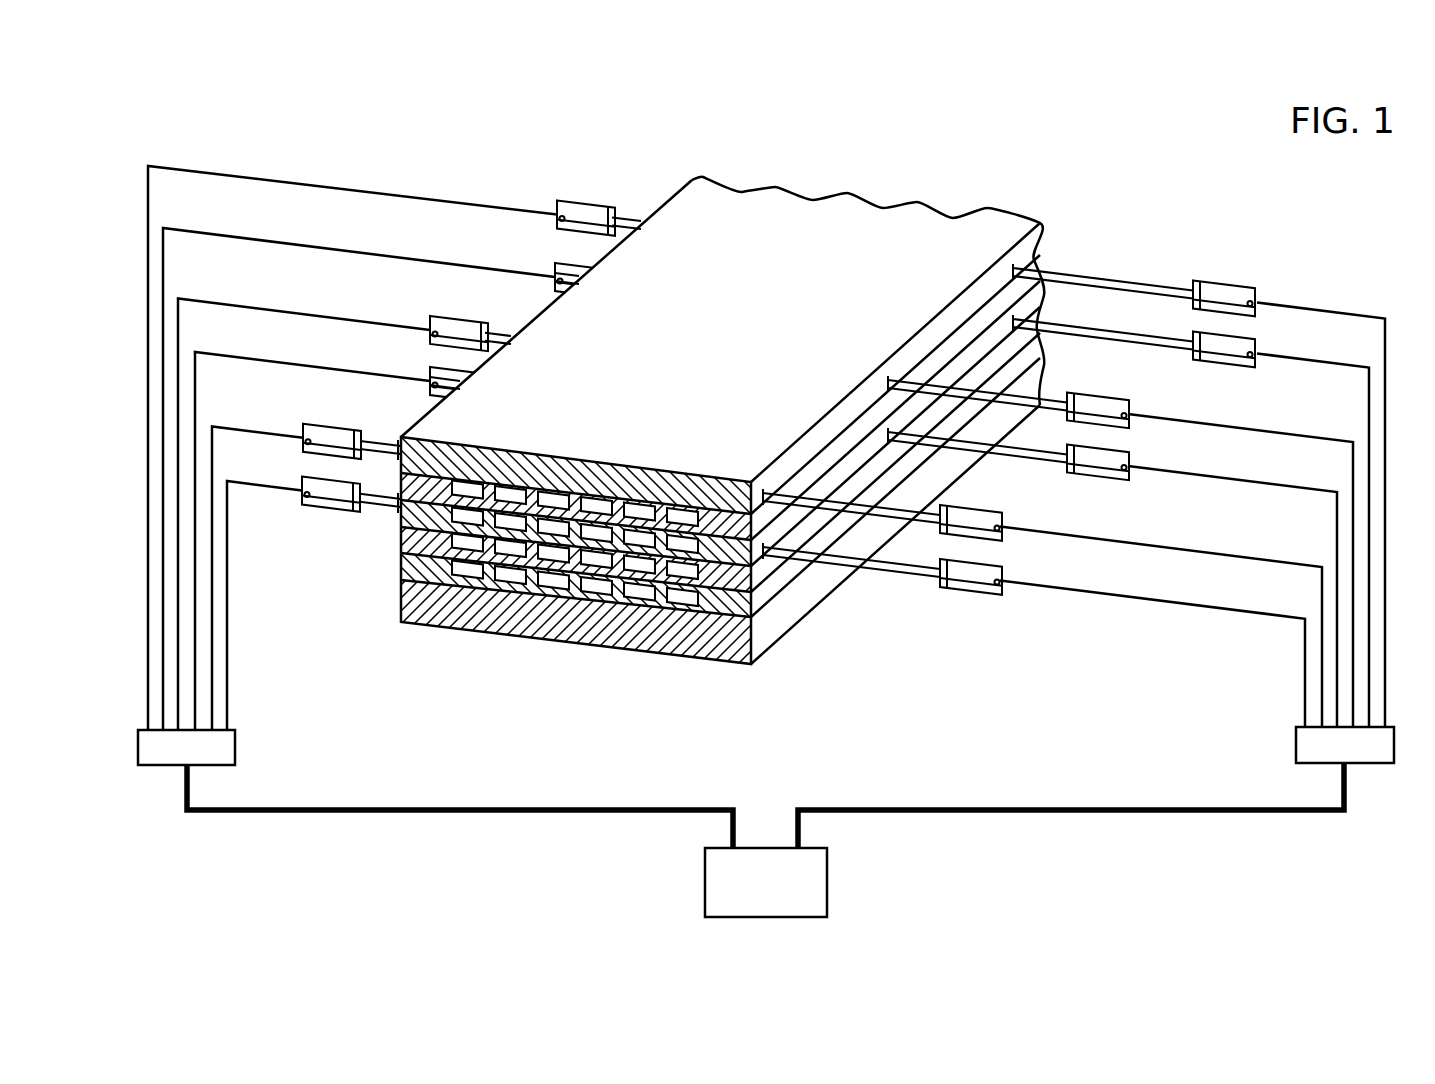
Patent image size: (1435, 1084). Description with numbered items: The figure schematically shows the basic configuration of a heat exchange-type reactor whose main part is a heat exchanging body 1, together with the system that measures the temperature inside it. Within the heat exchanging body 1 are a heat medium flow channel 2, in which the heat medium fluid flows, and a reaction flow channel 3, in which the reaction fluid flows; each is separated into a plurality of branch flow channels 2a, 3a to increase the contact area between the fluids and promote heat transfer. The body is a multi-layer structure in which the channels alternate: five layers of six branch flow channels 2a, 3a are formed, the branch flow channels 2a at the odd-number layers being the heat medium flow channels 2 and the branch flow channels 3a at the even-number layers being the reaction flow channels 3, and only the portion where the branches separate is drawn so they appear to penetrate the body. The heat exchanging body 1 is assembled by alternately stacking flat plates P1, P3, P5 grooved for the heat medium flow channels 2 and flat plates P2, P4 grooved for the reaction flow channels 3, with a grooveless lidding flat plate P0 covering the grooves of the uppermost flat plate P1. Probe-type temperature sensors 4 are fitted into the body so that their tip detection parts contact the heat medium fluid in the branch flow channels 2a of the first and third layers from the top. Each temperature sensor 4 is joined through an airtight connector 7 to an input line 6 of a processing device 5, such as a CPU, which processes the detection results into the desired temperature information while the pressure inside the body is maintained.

The heat exchanging body 1 is at (850, 217).
The heat medium flow channel 2 is at (600, 450).
The branch flow channel 2a is at (748, 395).
The reaction flow channel 3 is at (576, 639).
The branch flow channel 3a is at (695, 596).
The temperature sensor 4 is at (622, 222).
The processing device 5 is at (828, 876).
The input line 6 is at (362, 195).
The terminal 7 is at (575, 212).
The flat plate P0 is at (1033, 245).
The flat plate P1 is at (1035, 262).
The flat plate P2 is at (1035, 310).
The flat plate P3 is at (400, 537).
The flat plate P4 is at (400, 567).
The flat plate P5 is at (415, 617).